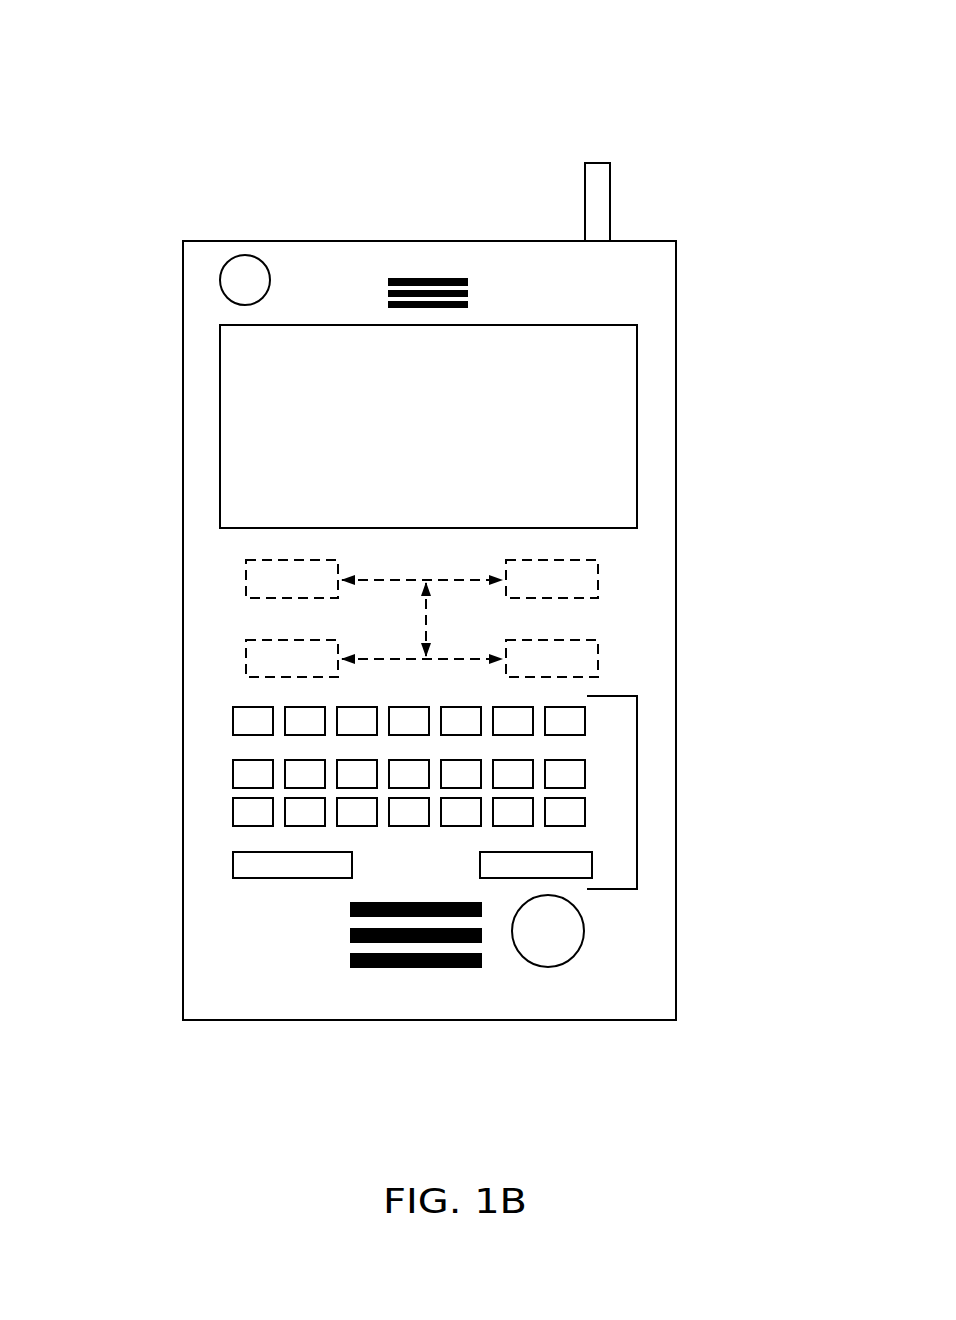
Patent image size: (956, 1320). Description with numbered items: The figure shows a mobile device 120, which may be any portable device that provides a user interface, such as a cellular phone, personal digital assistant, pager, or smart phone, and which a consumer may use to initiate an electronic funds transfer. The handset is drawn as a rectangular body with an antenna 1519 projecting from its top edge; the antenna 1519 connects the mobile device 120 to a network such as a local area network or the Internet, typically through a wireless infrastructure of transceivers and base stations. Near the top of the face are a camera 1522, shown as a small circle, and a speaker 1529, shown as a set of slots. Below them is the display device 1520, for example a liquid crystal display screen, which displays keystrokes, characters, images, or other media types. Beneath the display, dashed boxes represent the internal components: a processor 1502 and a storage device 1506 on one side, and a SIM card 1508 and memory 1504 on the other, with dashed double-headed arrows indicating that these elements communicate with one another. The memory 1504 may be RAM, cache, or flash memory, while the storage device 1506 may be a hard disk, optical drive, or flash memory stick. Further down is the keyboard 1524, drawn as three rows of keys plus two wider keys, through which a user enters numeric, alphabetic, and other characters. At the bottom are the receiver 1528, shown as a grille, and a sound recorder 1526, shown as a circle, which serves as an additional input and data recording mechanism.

The mobile device 120 is at (490, 90).
The antenna 1519 is at (598, 200).
The camera 1522 is at (167, 250).
The speaker 1529 is at (428, 278).
The display device 1520 is at (502, 426).
The processor 1502 is at (245, 580).
The storage device 1506 is at (245, 659).
The SIM card 1508 is at (600, 578).
The memory 1504 is at (600, 658).
The keyboard 1524 is at (639, 785).
The sound recorder 1526 is at (552, 931).
The receiver 1528 is at (413, 968).